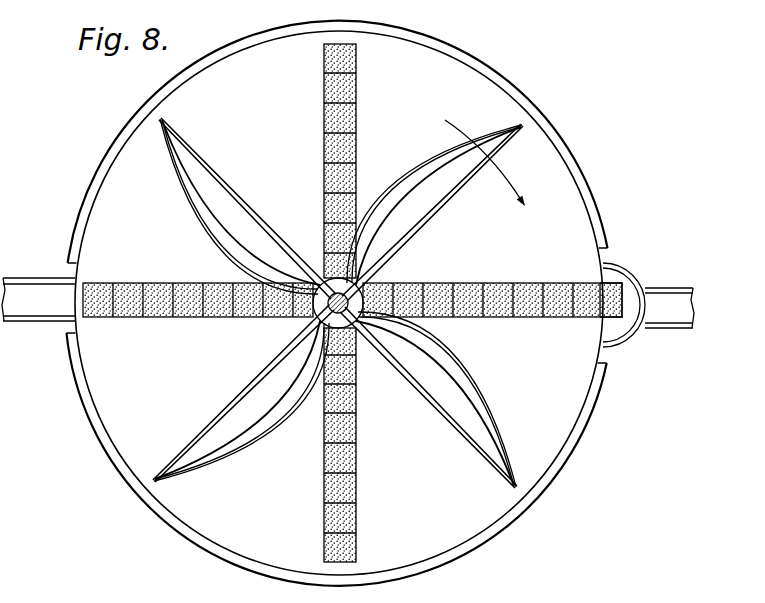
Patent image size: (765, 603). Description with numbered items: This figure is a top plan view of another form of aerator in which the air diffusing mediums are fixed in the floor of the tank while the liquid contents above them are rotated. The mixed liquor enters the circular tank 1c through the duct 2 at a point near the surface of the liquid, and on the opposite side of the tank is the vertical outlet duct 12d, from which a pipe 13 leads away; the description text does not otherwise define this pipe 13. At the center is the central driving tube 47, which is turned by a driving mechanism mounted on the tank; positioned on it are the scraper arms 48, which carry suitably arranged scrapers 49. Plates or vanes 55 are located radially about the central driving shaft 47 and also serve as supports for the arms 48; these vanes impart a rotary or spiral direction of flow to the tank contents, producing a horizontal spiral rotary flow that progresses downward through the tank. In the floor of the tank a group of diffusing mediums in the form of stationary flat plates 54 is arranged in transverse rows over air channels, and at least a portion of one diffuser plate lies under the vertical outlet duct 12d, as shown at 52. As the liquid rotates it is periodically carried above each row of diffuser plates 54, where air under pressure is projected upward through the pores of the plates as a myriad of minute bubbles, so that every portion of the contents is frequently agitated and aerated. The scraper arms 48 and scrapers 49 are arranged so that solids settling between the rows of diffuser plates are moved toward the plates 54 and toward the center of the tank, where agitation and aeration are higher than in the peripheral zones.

The tank 1c is at (561, 468).
The duct 2 is at (48, 322).
The vertical outlet duct 12d is at (636, 281).
The outlet pipe 13 is at (686, 330).
The central driving tube 47 is at (366, 296).
The scraper arms 48 is at (402, 189).
The scrapers 49 is at (446, 153).
The diffuser plate portion under outlet duct 52 is at (617, 322).
The stationary flat plates 54 is at (324, 172).
The vanes 55 is at (443, 417).